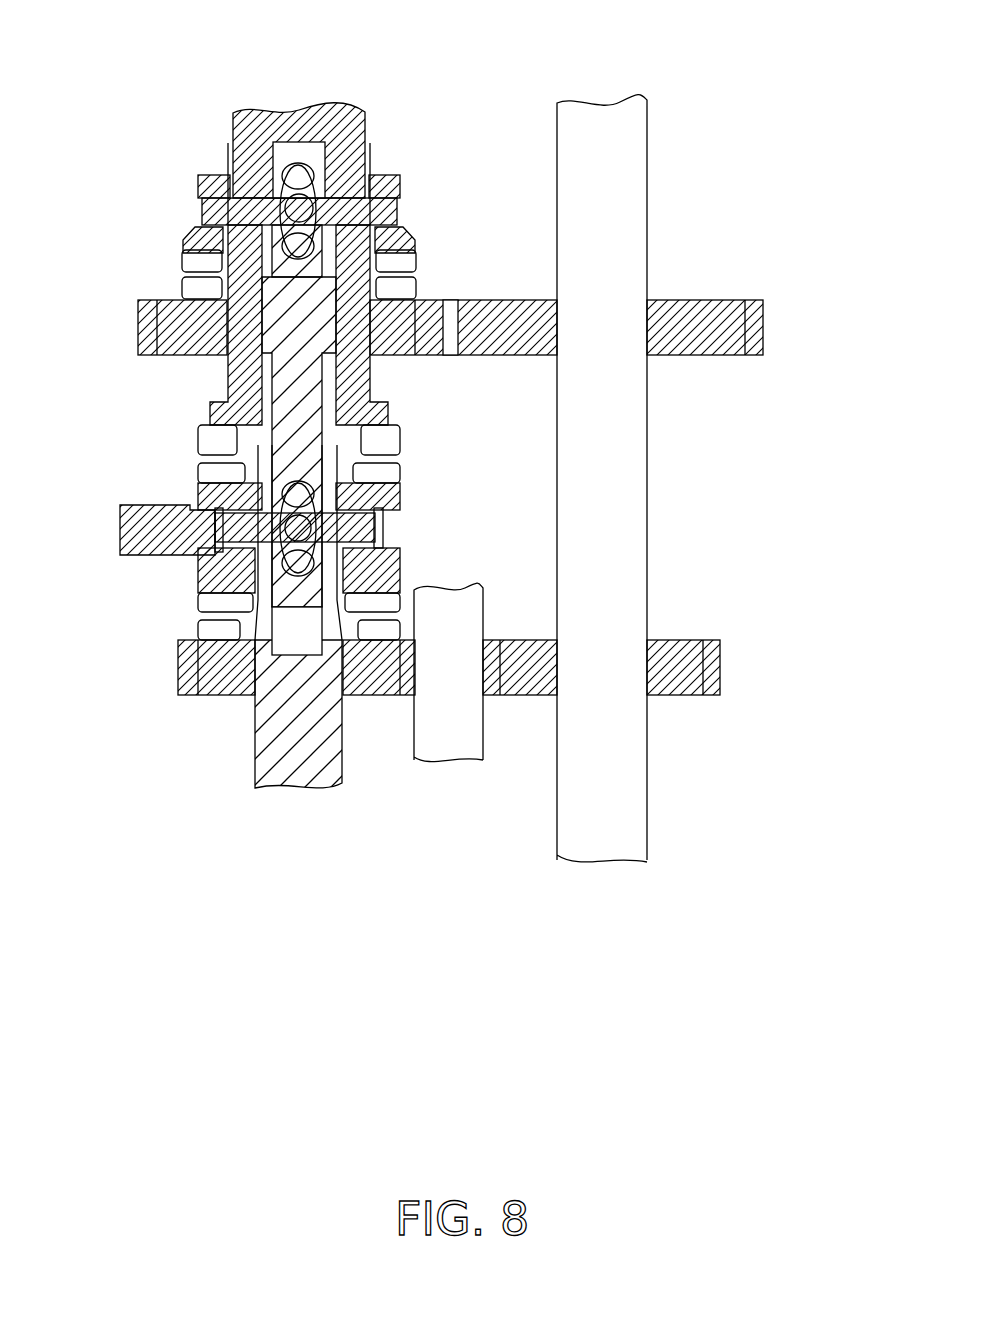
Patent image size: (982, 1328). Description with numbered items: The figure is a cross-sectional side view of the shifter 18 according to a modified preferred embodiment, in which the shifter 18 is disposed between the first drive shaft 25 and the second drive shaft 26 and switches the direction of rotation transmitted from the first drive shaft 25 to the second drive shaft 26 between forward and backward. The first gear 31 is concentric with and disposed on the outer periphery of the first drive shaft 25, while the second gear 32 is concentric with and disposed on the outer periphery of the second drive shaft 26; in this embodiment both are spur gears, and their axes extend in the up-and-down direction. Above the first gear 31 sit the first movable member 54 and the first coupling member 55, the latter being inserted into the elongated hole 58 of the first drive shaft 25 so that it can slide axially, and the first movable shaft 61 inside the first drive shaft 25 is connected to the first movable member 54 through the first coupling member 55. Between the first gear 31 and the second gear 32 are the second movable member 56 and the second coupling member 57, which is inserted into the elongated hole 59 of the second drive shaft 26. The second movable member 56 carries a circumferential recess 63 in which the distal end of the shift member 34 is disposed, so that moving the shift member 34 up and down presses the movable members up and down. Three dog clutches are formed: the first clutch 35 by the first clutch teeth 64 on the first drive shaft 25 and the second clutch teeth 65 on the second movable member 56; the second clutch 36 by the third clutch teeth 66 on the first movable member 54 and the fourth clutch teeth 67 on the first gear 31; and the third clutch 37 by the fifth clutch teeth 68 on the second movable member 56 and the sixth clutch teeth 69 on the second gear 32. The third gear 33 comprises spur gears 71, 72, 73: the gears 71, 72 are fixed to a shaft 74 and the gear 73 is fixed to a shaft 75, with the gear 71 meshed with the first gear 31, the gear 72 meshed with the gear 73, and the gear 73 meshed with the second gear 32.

The shifter 18 is at (480, 128).
The first drive shaft 25 is at (237, 367).
The second drive shaft 26 is at (305, 765).
The first gear 31 is at (418, 345).
The second gear 32 is at (228, 688).
The third gear 33 is at (486, 478).
The shift member 34 is at (118, 528).
The first clutch 35 is at (226, 455).
The second clutch 36 is at (234, 280).
The third clutch 37 is at (226, 622).
The first movable member 54 is at (413, 243).
The first coupling member 55 is at (202, 212).
The second movable member 56 is at (385, 563).
The second coupling member 57 is at (370, 525).
The elongated hole 58 is at (248, 183).
The elongated hole 59 is at (370, 498).
The first movable shaft 61 is at (300, 266).
The recess 63 is at (215, 540).
The first clutch teeth 64 is at (205, 437).
The second clutch teeth 65 is at (205, 472).
The third clutch teeth 66 is at (185, 258).
The fourth clutch teeth 67 is at (182, 292).
The fifth clutch teeth 68 is at (205, 598).
The sixth clutch teeth 69 is at (200, 633).
The gear 71 is at (735, 325).
The gear 72 is at (690, 665).
The gear 73 is at (410, 680).
The shaft 74 is at (630, 482).
The shaft 75 is at (450, 740).